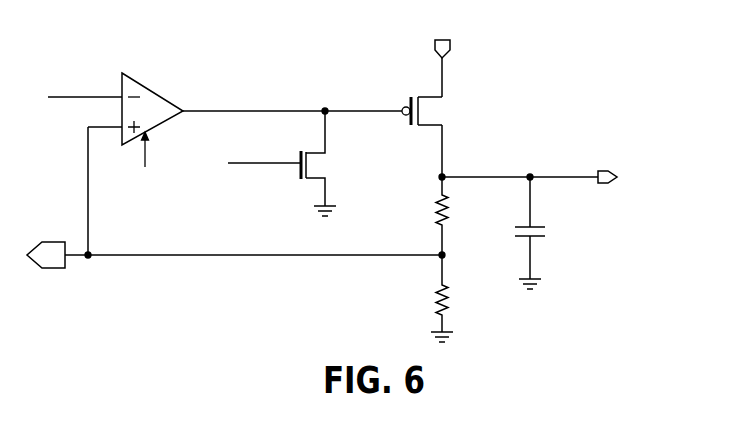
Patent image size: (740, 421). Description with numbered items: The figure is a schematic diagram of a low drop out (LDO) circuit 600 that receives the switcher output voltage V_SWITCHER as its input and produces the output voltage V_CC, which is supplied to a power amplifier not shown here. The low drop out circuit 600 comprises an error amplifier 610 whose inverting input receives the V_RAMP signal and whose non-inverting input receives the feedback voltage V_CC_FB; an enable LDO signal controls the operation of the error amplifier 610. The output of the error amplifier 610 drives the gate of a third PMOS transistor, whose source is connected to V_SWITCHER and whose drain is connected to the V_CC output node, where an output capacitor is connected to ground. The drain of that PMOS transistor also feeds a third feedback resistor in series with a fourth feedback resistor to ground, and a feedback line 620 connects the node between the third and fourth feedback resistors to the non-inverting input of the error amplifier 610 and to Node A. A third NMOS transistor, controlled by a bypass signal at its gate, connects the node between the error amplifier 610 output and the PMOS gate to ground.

The low drop out (LDO) circuit 600 is at (555, 39).
The error amplifier 610 is at (153, 83).
The feedback line 620 is at (253, 254).